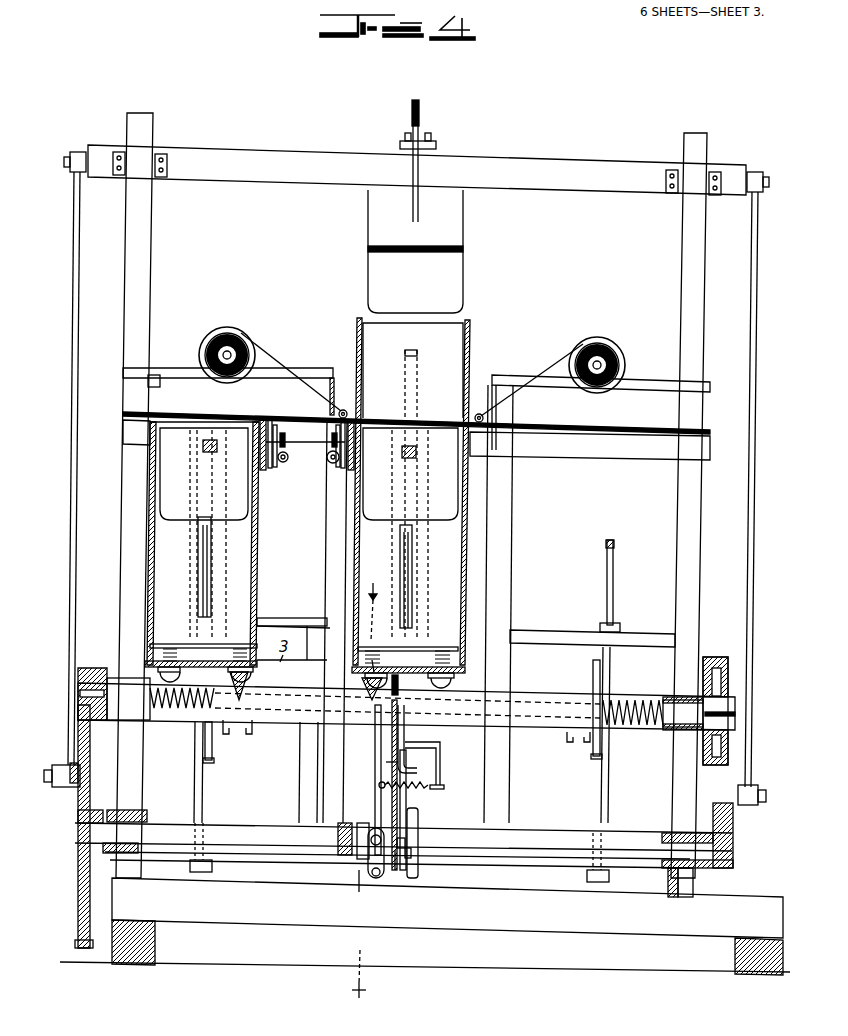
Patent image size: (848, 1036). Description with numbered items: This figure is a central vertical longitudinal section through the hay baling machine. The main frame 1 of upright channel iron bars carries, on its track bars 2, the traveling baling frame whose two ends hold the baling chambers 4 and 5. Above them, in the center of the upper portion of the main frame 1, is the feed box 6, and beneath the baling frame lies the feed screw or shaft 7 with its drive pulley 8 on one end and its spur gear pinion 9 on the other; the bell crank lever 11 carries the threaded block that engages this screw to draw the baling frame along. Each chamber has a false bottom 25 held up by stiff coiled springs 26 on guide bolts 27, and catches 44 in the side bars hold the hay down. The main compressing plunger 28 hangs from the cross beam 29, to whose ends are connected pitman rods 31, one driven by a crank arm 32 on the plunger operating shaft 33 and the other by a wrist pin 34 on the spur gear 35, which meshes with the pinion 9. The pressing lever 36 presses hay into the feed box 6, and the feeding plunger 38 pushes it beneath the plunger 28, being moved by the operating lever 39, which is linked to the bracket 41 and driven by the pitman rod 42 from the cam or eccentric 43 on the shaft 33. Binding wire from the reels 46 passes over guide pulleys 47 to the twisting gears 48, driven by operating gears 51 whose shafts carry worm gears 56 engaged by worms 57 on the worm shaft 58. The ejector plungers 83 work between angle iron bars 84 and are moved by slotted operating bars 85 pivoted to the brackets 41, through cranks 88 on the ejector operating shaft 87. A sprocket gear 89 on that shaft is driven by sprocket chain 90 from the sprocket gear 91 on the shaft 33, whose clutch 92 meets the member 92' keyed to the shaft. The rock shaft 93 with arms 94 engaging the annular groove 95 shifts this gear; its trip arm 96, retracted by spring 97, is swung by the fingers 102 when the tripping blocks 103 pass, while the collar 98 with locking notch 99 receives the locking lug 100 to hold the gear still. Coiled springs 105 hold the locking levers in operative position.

The main frame 1 is at (152, 258).
The track bar 2 is at (290, 722).
The baling chamber 4 is at (410, 534).
The baling chamber 5 is at (245, 570).
The feed box 6 is at (356, 327).
The feed screw or shaft 7 is at (170, 710).
The drive pulley 8 is at (714, 657).
The spur gear pinion 9 is at (90, 678).
The bell crank lever 11 is at (368, 792).
The false bottom 25 is at (228, 644).
The coiled spring 26 is at (165, 655).
The guide bolt 27 is at (165, 630).
The main compressing plunger 28 is at (415, 251).
The cross beam 29 is at (570, 164).
The pitman rod 31 is at (72, 320).
The crank arm 32 is at (733, 822).
The plunger operating shaft 33 is at (548, 840).
The wrist pin 34 is at (58, 787).
The spur gear 35 is at (78, 875).
The pressing lever 36 is at (420, 112).
The feeding plunger 38 is at (413, 370).
The operating lever 39 is at (420, 392).
The supporting arm or bracket 41 is at (200, 874).
The pitman rod 42 is at (441, 758).
The cam or eccentric 43 is at (419, 826).
The catch 44 is at (200, 453).
The reel or spool of wire 46 is at (240, 340).
The guide pulley 47 is at (360, 395).
The twisting gear 48 is at (263, 420).
The operating gear 51 is at (270, 450).
The worm gear 56 is at (342, 408).
The worm 57 is at (330, 465).
The worm shaft 58 is at (295, 446).
The plunger 83 is at (200, 568).
The angle iron bar 84 is at (272, 622).
The slotted operating bar 85 is at (203, 815).
The ejector operating shaft 87 is at (540, 700).
The crank 88 is at (209, 760).
The sprocket gear 89 is at (374, 660).
The sprocket chain 90 is at (397, 740).
The sprocket gear 91 is at (380, 880).
The clutch 92 is at (354, 868).
The clutch member 92' is at (328, 868).
The rock shaft 93 is at (359, 895).
The arm 94 is at (372, 836).
The annular groove 95 is at (372, 836).
The trip arm 96 is at (386, 762).
The retracting spring 97 is at (430, 785).
The collar 98 is at (410, 860).
The locking notch 99 is at (406, 842).
The locking lug 100 is at (397, 872).
The lever engaging finger 102 is at (372, 702).
The tripping block 103 is at (240, 700).
The coiled spring 105 is at (360, 728).